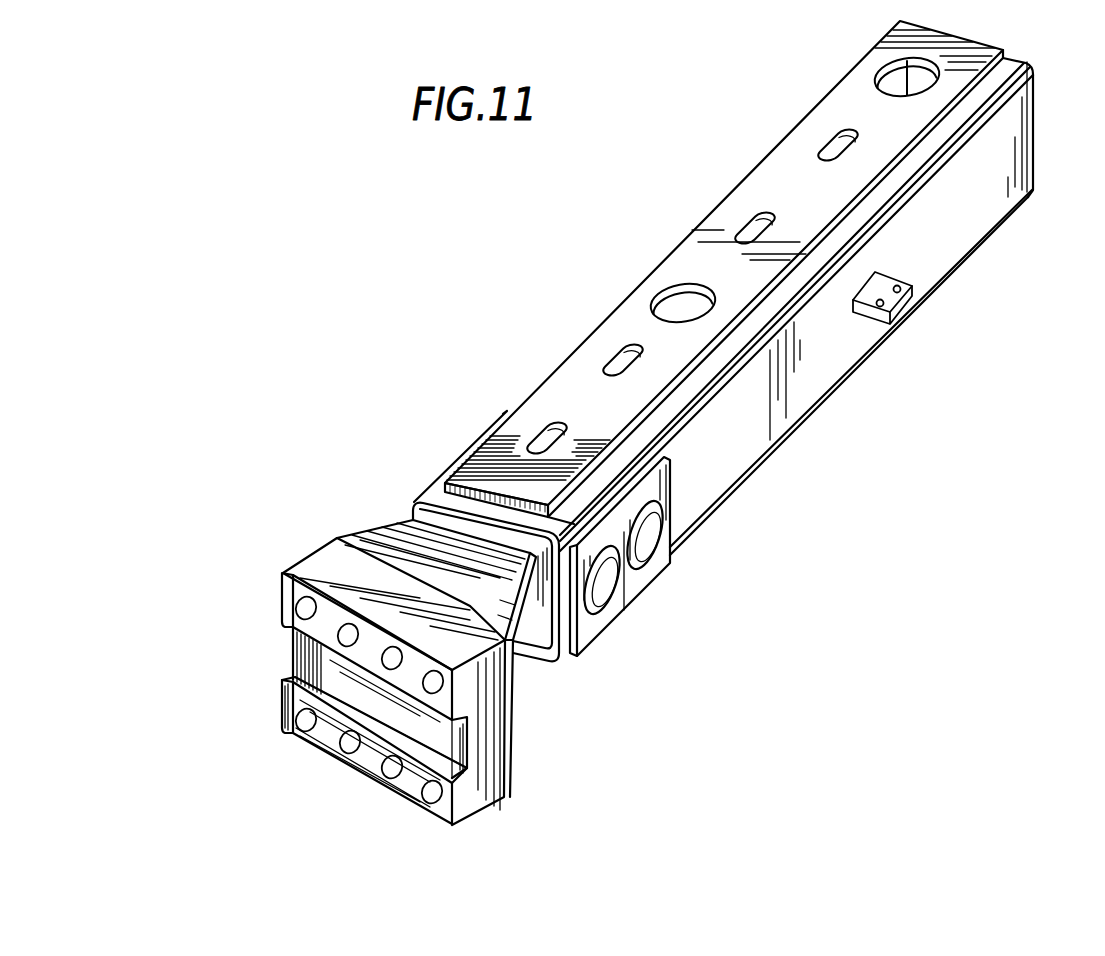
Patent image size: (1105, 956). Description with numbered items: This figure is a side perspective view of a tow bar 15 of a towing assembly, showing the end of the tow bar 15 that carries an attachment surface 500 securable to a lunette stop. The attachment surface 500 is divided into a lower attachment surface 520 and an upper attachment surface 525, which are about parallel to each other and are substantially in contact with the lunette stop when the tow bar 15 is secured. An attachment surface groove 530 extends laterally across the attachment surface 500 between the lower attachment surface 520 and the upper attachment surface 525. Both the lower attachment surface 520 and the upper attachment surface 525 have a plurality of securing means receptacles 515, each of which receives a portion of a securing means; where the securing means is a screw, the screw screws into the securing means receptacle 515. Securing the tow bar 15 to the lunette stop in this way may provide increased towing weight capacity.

The tow bar 15 is at (832, 375).
The attachment surface 500 is at (394, 696).
The securing means receptacles 515 is at (437, 683).
The lower attachment surface 520 is at (285, 723).
The upper attachment surface 525 is at (282, 572).
The attachment surface groove 530 is at (313, 662).